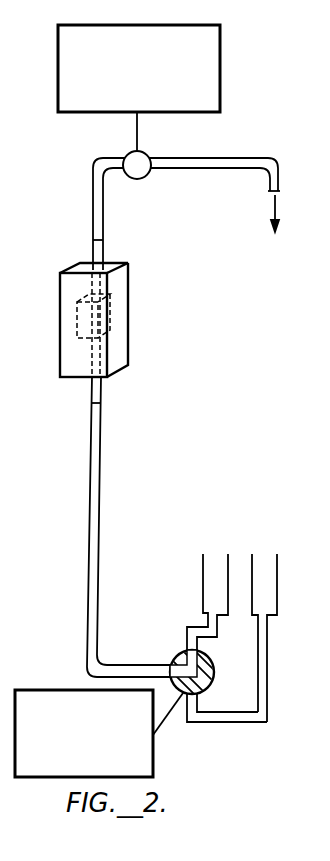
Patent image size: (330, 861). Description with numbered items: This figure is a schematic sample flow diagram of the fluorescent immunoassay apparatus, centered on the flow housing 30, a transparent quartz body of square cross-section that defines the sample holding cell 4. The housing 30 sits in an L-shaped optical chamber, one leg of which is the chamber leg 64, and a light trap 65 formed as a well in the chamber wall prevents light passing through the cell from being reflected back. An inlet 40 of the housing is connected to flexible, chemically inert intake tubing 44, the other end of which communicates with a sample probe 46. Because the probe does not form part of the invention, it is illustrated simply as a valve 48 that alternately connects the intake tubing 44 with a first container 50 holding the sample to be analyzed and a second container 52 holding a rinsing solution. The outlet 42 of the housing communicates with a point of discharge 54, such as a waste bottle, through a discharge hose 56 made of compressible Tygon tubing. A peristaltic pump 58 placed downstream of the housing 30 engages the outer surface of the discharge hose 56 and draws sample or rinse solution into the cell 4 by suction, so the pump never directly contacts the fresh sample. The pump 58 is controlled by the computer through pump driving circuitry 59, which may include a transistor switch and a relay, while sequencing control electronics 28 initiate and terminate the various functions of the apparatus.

The pump driving circuitry 59 is at (205, 26).
The pump 58 is at (150, 155).
The discharge hose 56 is at (222, 158).
The point of discharge 54 is at (268, 193).
The outlet 42 is at (104, 247).
The flow housing 30 is at (118, 353).
The sample holding cell 4 is at (112, 310).
The inlet 40 is at (103, 392).
The intake tubing 44 is at (98, 617).
The valve 48 is at (212, 661).
The first container 50 is at (252, 568).
The second container 52 is at (203, 577).
The sample probe 46 is at (219, 727).
The sequencing control electronics 28 is at (60, 690).
The chamber leg 64 is at (0, 432).
The light trap 65 is at (0, 148).